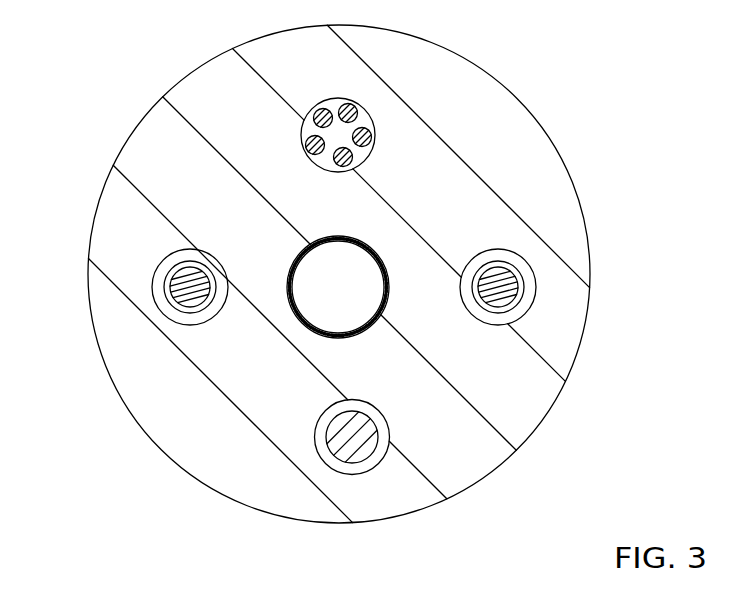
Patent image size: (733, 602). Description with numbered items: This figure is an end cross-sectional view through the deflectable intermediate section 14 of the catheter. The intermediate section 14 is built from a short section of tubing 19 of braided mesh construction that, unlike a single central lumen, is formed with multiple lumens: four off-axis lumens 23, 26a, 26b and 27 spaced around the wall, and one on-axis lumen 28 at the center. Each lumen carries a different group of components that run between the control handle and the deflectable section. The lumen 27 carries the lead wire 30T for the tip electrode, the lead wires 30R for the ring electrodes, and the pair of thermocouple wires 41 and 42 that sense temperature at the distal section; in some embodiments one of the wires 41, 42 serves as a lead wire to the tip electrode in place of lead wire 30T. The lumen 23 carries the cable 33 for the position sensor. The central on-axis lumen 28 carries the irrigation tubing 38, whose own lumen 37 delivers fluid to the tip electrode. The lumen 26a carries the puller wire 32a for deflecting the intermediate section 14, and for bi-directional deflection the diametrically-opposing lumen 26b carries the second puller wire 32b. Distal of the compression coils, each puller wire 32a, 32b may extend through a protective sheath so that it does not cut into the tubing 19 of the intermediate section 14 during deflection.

The intermediate section 14 is at (579, 413).
The tubing 19 is at (542, 127).
The off-axis lumen 23 is at (302, 493).
The off-axis lumen 26a is at (120, 314).
The off-axis lumen 26b is at (567, 293).
The off-axis lumen 27 is at (364, 110).
The on-axis lumen 28 is at (351, 300).
The lead wire 30T is at (300, 140).
The lead wires 30R is at (365, 155).
The puller wire 32a is at (170, 290).
The puller wire 32b is at (503, 288).
The cable 33 is at (332, 462).
The lumen 37 is at (337, 290).
The irrigation tubing 38 is at (382, 310).
The thermocouple wire 41 is at (339, 135).
The thermocouple wire 42 is at (380, 155).